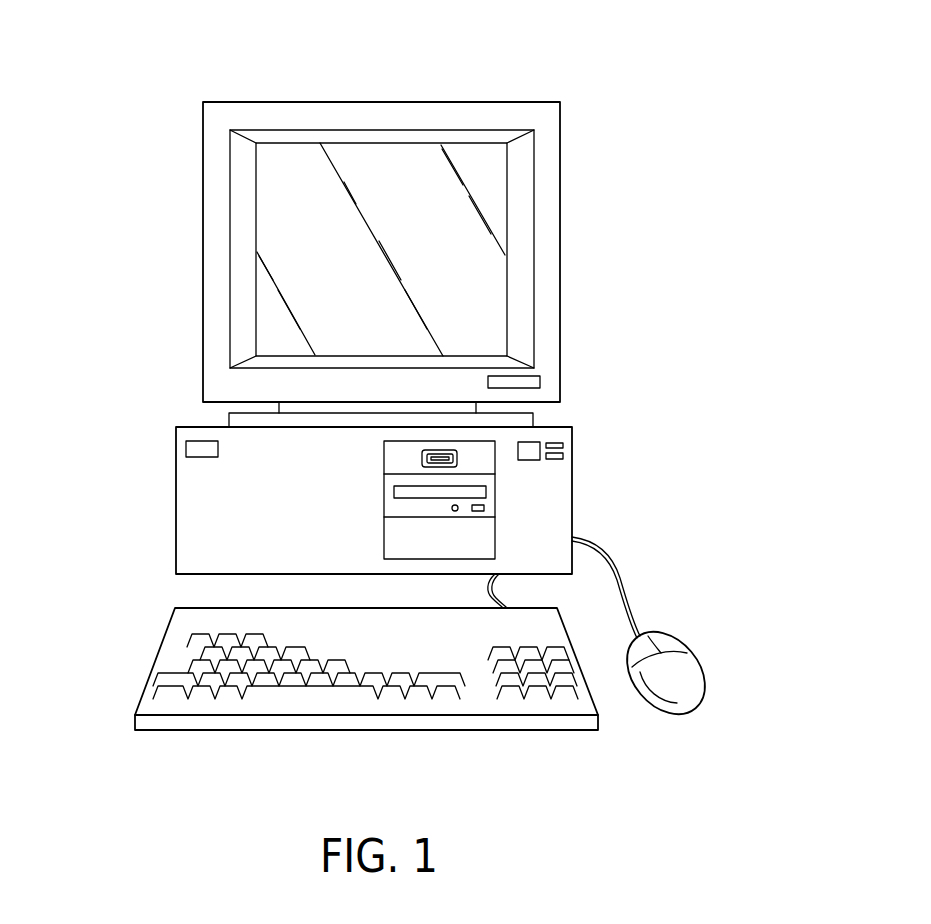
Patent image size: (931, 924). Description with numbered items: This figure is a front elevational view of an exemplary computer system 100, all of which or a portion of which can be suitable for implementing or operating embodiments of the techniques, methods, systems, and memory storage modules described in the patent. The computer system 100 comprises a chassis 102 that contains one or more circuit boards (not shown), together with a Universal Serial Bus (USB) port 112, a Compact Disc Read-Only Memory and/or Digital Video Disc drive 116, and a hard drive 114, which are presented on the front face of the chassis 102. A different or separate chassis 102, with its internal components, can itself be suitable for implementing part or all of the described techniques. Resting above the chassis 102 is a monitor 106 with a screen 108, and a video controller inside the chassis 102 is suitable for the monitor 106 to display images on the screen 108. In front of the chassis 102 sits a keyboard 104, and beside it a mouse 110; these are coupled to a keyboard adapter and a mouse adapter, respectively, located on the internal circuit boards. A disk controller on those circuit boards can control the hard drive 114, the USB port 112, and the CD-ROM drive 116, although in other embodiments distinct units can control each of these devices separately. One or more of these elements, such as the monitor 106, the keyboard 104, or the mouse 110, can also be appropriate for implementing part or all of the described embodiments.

The computer system 100 is at (556, 76).
The chassis 102 is at (176, 503).
The keyboard 104 is at (158, 653).
The monitor 106 is at (273, 101).
The screen 108 is at (302, 252).
The mouse 110 is at (683, 663).
The Universal Serial Bus (USB) port 112 is at (460, 454).
The hard drive 114 is at (487, 537).
The Compact Disc Read-Only Memory (CD-ROM) and/or Digital Video Disc (DVD) drive 116 is at (487, 497).